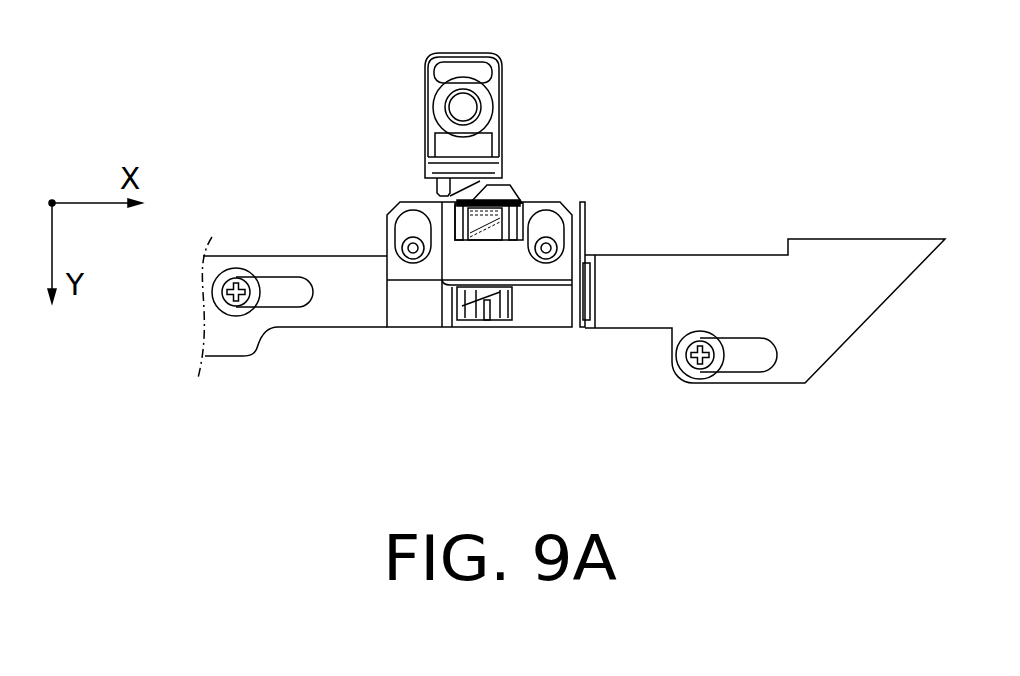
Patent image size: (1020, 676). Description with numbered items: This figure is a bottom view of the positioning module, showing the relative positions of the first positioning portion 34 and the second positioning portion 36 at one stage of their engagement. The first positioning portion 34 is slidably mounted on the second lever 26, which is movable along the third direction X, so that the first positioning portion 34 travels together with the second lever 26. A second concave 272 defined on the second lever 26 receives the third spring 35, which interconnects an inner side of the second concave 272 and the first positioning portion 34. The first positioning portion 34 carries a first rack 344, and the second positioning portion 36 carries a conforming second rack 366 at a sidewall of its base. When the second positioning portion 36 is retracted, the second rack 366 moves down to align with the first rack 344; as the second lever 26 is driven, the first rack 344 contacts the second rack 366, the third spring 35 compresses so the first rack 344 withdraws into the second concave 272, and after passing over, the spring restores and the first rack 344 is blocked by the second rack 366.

The second lever 26 is at (838, 275).
The first positioning portion 34 is at (525, 217).
The third spring 35 is at (492, 290).
The second positioning portion 36 is at (494, 94).
The second concave 272 is at (407, 312).
The first rack 344 is at (510, 200).
The second rack 366 is at (440, 187).